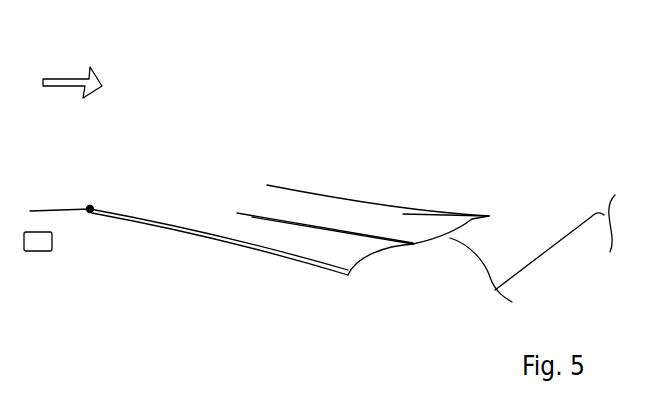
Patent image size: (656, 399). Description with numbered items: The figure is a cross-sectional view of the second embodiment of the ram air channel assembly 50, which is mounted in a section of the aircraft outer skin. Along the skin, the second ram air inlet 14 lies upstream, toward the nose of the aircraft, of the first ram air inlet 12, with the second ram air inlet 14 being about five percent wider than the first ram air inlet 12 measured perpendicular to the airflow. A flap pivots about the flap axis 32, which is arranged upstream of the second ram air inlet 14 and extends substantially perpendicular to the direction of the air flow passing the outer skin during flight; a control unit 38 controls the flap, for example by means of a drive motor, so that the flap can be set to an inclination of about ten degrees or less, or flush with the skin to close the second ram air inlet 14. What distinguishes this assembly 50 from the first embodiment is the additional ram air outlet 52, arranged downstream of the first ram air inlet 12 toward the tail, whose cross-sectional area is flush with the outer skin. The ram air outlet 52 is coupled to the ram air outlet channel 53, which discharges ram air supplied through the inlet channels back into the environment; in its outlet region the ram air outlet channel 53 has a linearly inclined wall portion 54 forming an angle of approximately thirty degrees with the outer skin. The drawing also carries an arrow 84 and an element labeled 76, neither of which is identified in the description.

The direction of travel arrow 84 is at (67, 78).
The ram air channel assembly 50 is at (292, 85).
The first ram air inlet 12 is at (260, 193).
The second ram air inlet 14 is at (210, 213).
The support rail 76 is at (153, 220).
The flap axis 32 is at (92, 215).
The control unit 38 is at (39, 252).
The ram air outlet 52 is at (536, 216).
The ram air outlet channel 53 is at (498, 250).
The linearly inclined wall portion 54 is at (547, 255).